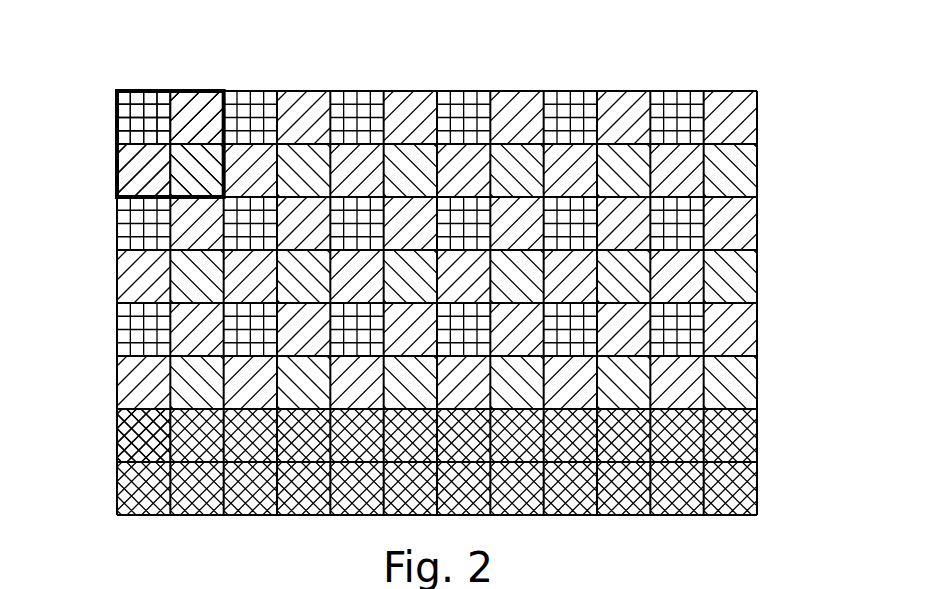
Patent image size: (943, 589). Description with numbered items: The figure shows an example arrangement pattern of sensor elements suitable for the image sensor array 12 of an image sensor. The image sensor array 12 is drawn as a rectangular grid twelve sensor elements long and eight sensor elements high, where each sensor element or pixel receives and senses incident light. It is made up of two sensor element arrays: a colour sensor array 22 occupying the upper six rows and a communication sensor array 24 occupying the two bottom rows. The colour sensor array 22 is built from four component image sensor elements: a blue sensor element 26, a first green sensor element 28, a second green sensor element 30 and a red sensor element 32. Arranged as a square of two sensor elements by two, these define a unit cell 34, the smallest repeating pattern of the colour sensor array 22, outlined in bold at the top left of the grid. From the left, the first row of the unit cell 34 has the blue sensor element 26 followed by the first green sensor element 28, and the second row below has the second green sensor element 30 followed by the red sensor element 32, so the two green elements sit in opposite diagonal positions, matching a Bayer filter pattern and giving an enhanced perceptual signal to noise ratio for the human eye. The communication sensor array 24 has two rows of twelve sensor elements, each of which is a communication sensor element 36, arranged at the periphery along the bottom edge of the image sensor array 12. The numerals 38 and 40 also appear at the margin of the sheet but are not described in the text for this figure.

The image sensor array 12 is at (443, 297).
The colour sensor array 22 is at (456, 265).
The communication sensor array 24 is at (443, 469).
The blue sensor element 26 is at (110, 112).
The first green sensor element 28 is at (215, 136).
The second green sensor element 30 is at (105, 170).
The red sensor element 32 is at (200, 174).
The unit cell 34 is at (195, 85).
The communication sensor element 36 is at (105, 438).
The element 38 is at (778, 588).
The element 40 is at (223, 585).